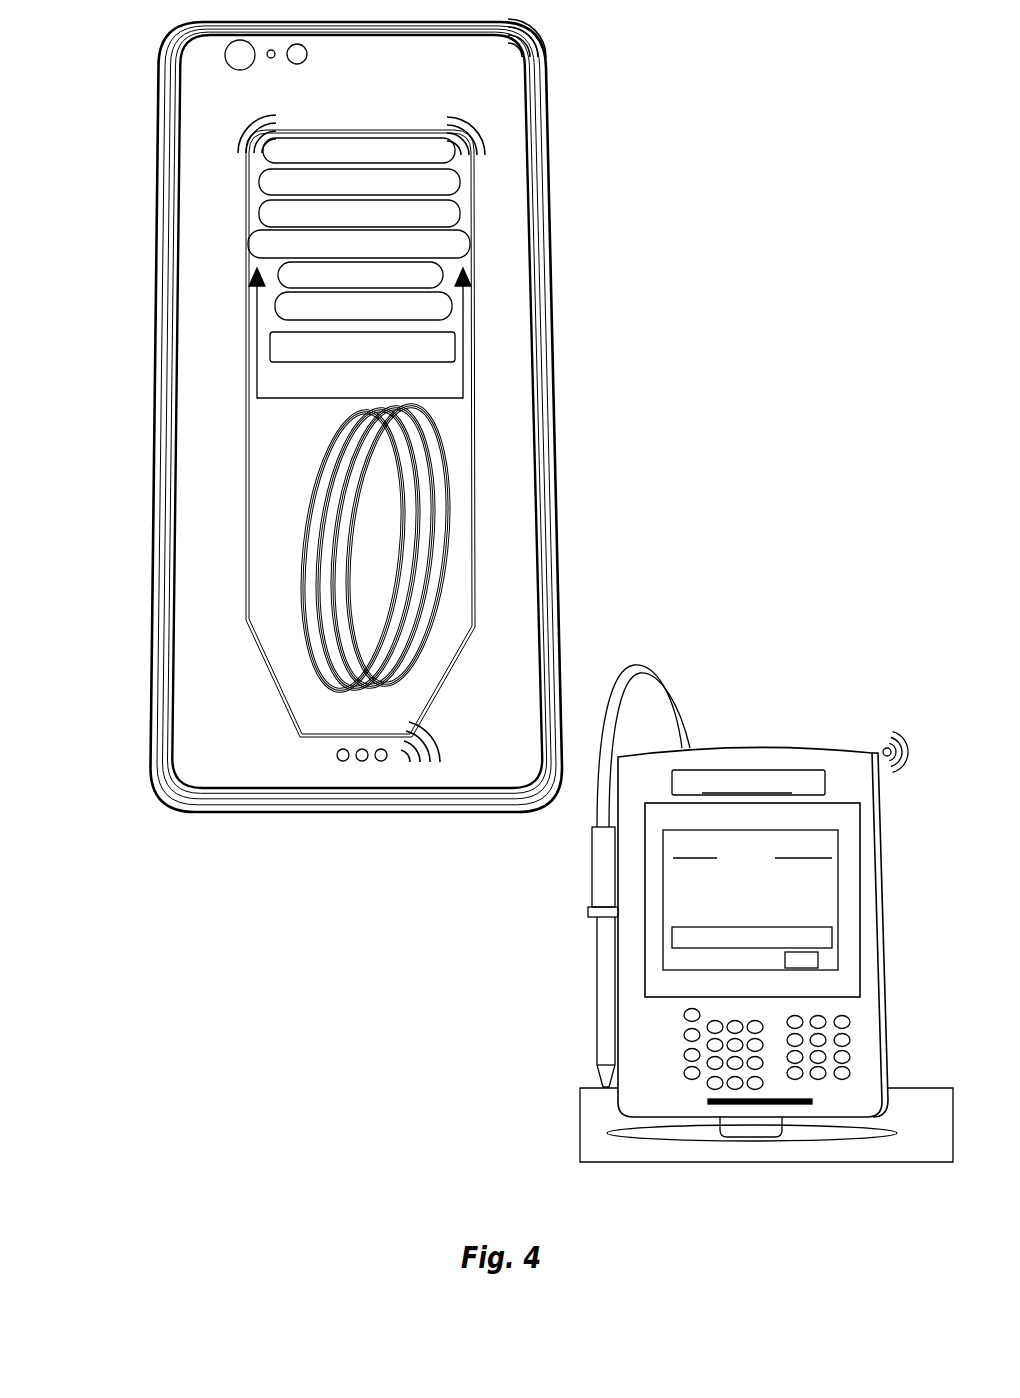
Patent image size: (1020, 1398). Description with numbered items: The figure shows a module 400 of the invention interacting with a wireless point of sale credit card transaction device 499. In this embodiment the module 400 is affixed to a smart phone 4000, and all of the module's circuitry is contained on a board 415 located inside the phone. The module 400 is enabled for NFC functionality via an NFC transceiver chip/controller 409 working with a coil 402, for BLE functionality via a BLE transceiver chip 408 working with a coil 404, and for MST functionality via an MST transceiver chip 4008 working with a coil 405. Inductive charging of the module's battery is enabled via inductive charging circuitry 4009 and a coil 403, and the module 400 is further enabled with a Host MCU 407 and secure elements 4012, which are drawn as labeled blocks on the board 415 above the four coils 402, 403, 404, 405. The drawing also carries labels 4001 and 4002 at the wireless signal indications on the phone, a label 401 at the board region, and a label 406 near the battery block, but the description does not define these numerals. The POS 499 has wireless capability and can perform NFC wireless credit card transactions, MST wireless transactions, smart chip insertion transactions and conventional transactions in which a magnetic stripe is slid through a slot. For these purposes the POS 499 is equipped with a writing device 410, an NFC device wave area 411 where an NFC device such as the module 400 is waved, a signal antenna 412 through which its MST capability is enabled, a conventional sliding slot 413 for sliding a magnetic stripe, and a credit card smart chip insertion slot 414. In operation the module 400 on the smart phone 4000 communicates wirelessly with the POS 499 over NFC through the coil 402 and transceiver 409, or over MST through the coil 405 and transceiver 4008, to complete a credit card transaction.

The module 400 is at (199, 151).
The smart phone 4000 is at (160, 174).
The wireless signal antenna 4001 is at (241, 134).
The wireless signal antenna 4002 is at (420, 747).
The circuit board panel 401 is at (255, 464).
The coil 402 is at (407, 508).
The coil 403 is at (425, 527).
The coil 404 is at (443, 528).
The coil 405 is at (462, 547).
The battery 406 is at (470, 279).
The Host MCU 407 is at (278, 310).
The BLE transceiver chip 408 is at (462, 198).
The NFC transceiver chip/controller 409 is at (472, 158).
The MST transceiver chip 4008 is at (462, 182).
The inductive charging circuitry 4009 is at (463, 230).
The secure elements 4012 is at (455, 347).
The board 415 is at (252, 369).
The wireless point of sale credit card transaction device 499 is at (412, 973).
The writing device 410 is at (600, 978).
The NFC device wave area 411 is at (808, 780).
The signal antenna 412 is at (886, 704).
The conventional sliding slot 413 is at (878, 895).
The credit card smart chip insertion slot 414 is at (708, 1100).